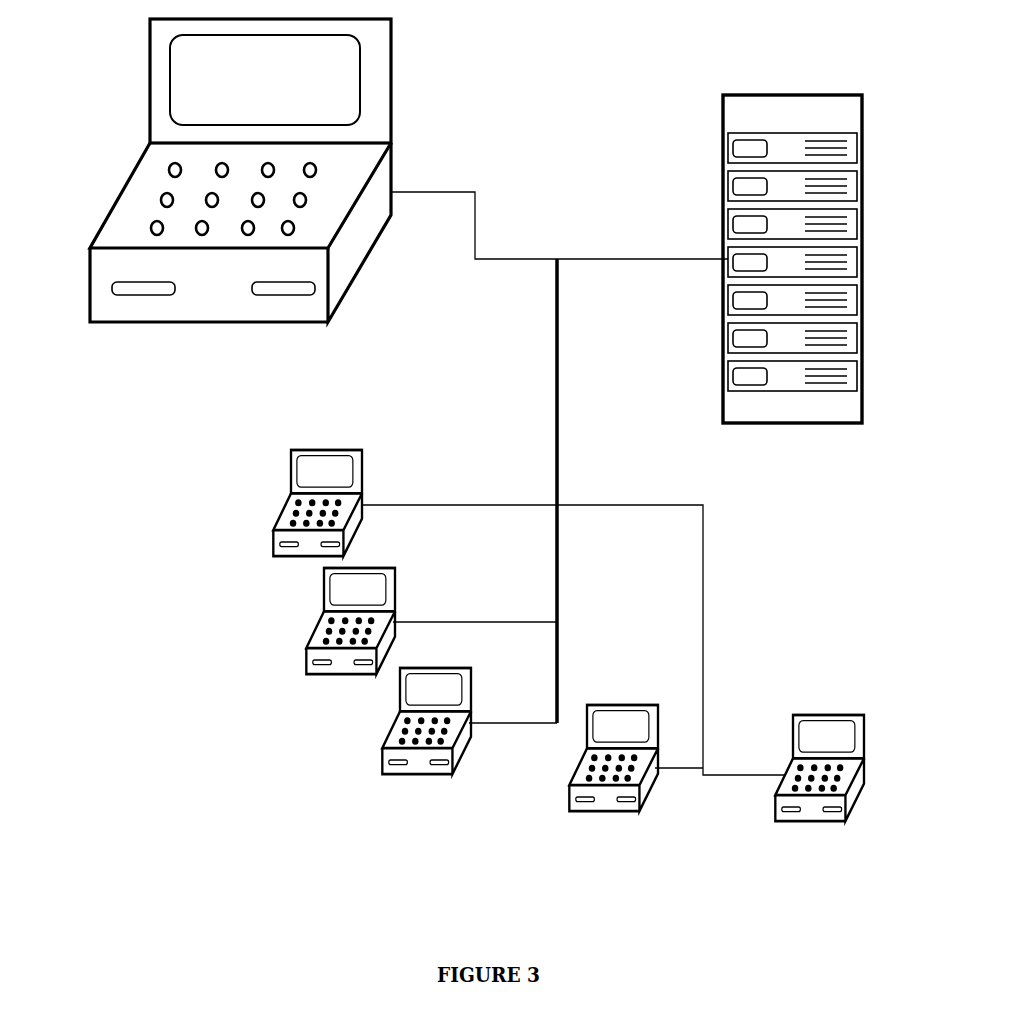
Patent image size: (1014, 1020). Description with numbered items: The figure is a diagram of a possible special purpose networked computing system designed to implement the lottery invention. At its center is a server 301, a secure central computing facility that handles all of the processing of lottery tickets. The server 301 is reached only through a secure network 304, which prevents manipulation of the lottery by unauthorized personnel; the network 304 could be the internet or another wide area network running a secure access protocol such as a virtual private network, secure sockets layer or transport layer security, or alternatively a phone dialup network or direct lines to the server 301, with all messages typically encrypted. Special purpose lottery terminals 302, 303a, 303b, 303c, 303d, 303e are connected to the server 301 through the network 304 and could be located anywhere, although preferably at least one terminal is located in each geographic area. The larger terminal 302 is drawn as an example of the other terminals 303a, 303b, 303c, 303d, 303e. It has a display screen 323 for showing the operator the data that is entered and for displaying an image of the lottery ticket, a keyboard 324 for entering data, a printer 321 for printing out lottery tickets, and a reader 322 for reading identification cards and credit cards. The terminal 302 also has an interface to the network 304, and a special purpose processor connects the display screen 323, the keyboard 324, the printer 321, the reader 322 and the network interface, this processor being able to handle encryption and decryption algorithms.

The server 301 is at (863, 138).
The special purpose lottery terminal 302 is at (130, 146).
The special purpose lottery terminal 303a is at (283, 502).
The special purpose lottery terminal 303b is at (318, 618).
The special purpose lottery terminal 303c is at (400, 715).
The special purpose lottery terminal 303d is at (585, 750).
The special purpose lottery terminal 303e is at (863, 760).
The secure network 304 is at (558, 448).
The printer 321 is at (112, 287).
The reader 322 is at (315, 288).
The display screen 323 is at (360, 77).
The keyboard 324 is at (169, 172).